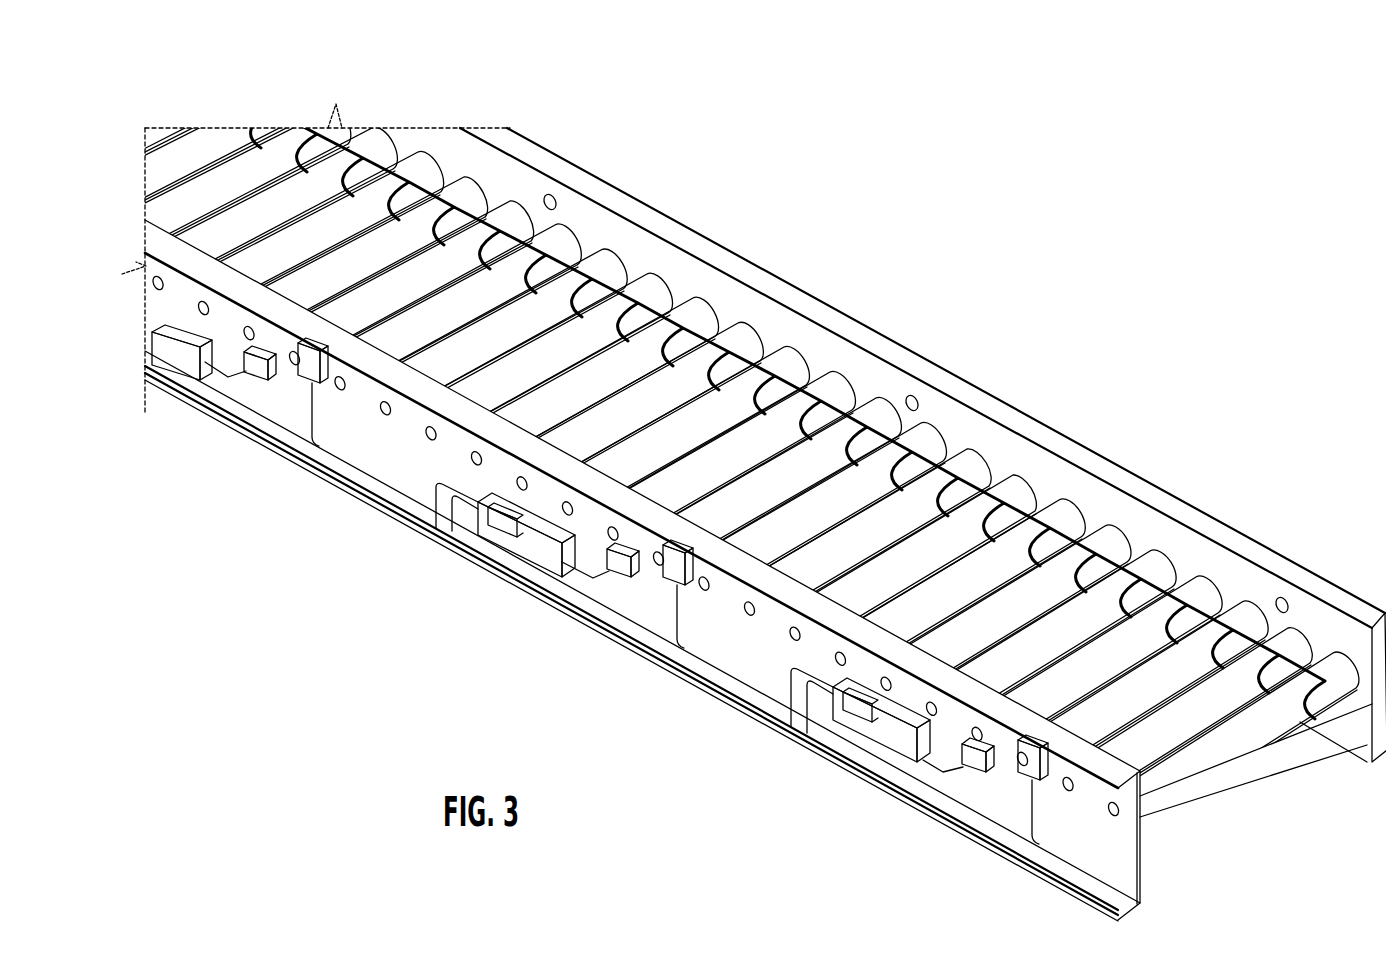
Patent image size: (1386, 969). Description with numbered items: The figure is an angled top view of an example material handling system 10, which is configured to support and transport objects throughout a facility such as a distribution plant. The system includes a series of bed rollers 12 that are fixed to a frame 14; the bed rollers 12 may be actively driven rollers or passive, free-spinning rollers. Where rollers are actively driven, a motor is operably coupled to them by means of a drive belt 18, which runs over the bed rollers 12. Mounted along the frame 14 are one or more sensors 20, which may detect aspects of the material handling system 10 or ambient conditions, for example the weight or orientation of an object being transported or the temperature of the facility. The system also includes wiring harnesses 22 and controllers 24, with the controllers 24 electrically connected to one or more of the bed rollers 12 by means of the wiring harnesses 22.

The material handling system 10 is at (693, 486).
The bed rollers 12 is at (833, 384).
The frame 14 is at (350, 440).
The drive belt 18 is at (927, 458).
The sensors 20 is at (656, 564).
The wiring harnesses 22 is at (746, 650).
The controllers 24 is at (482, 542).